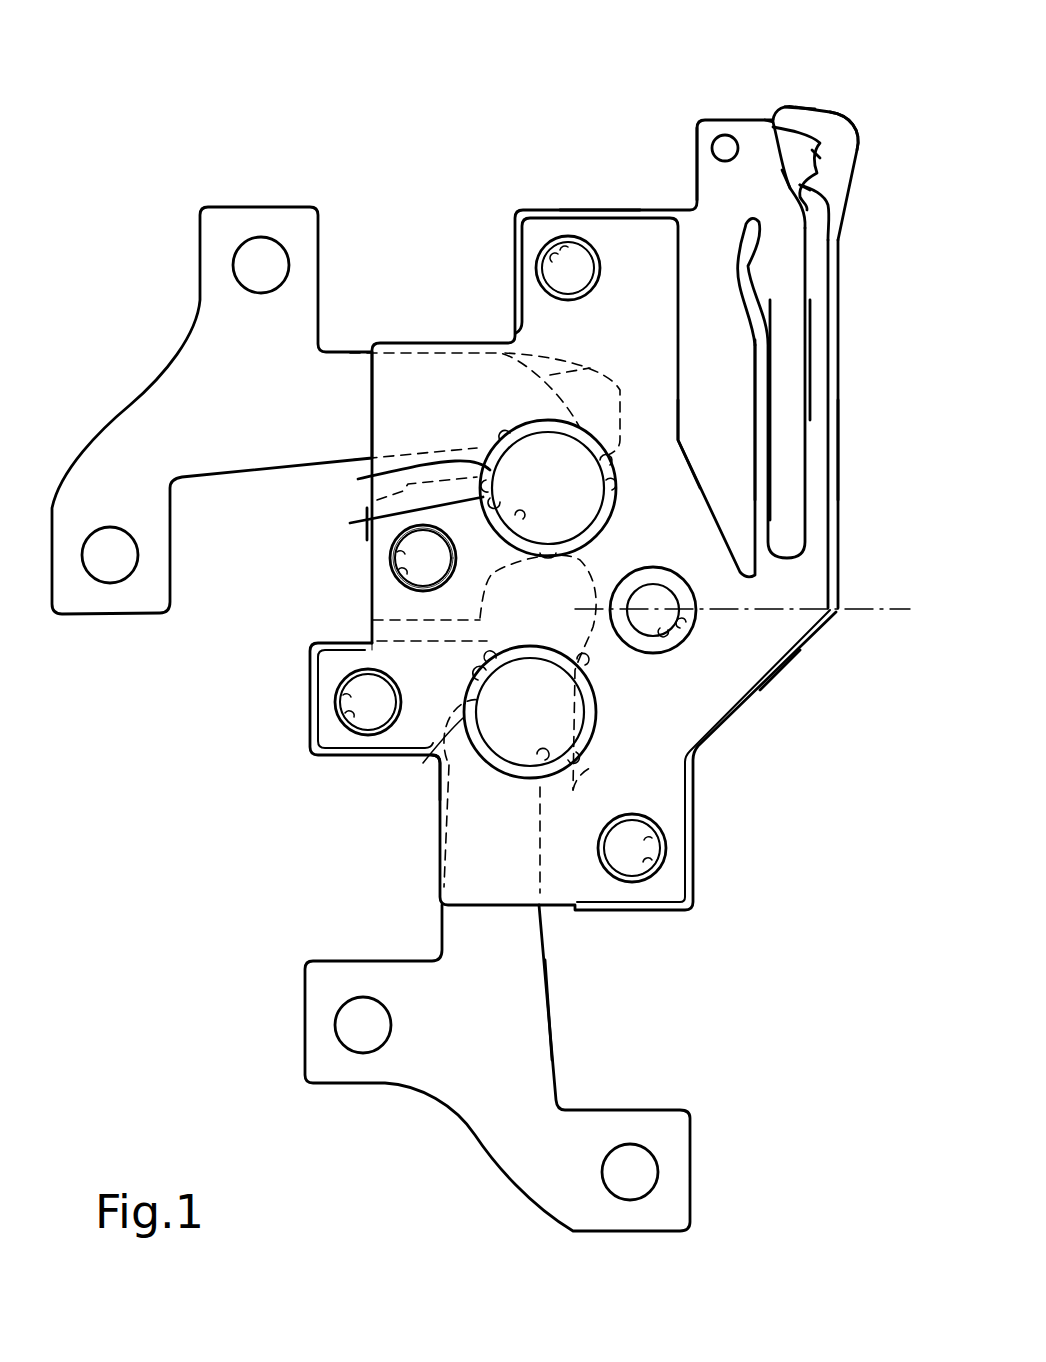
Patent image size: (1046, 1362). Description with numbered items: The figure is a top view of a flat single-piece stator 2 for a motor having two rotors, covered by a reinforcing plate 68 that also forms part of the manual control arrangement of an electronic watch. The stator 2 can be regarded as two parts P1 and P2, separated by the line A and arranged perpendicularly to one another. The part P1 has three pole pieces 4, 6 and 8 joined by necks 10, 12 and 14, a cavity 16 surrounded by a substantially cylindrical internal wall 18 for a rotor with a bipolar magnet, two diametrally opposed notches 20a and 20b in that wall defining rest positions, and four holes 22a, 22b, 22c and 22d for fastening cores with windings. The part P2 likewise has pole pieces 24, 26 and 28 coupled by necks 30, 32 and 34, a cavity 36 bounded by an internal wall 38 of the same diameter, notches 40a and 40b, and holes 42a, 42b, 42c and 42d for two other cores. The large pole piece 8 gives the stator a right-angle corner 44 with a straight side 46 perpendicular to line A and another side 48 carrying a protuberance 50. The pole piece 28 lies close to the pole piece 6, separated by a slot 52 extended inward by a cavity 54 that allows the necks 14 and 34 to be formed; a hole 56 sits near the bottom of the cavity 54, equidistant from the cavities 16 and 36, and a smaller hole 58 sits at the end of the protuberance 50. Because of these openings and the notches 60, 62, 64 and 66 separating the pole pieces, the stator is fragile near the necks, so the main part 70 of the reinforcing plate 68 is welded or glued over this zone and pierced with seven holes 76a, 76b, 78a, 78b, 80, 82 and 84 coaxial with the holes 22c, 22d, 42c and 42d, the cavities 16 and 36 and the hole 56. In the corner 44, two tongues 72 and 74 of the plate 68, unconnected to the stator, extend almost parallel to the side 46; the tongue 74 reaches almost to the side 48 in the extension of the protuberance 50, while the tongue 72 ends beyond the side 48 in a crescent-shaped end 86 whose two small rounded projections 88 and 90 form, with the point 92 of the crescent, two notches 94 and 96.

The stator 2 is at (563, 1013).
The pole piece 4 is at (280, 411).
The pole piece 6 is at (482, 563).
The pole piece 8 is at (726, 481).
The neck 10 is at (375, 478).
The neck 12 is at (613, 453).
The neck 14 is at (553, 556).
The cavity 16 is at (560, 506).
The internal wall 18 is at (523, 525).
The notch 20a is at (400, 515).
The notch 20b is at (605, 480).
The hole 22a is at (277, 257).
The hole 22b is at (114, 575).
The hole 22c is at (400, 558).
The hole 22d is at (565, 244).
The pole piece 24 is at (494, 1033).
The pole piece 26 is at (652, 756).
The pole piece 28 is at (441, 691).
The neck 30 is at (520, 782).
The neck 32 is at (437, 762).
The neck 34 is at (568, 655).
The cavity 36 is at (541, 729).
The internal wall 38 is at (518, 776).
The notch 40a is at (578, 760).
The notch 40b is at (480, 685).
The hole 42a is at (354, 1030).
The hole 42b is at (648, 1174).
The hole 42c is at (648, 862).
The hole 42d is at (343, 725).
The corner 44 is at (770, 297).
The straight side 46 is at (842, 440).
The side 48 is at (630, 208).
The protuberance 50 is at (750, 148).
The slot 52 is at (387, 625).
The cavity 54 is at (570, 623).
The hole 56 is at (664, 620).
The hole 58 is at (720, 158).
The notch 60 is at (387, 487).
The notch 62 is at (570, 365).
The notch 64 is at (543, 845).
The notch 66 is at (430, 754).
The reinforcing plate 68 is at (760, 680).
The main part 70 is at (428, 380).
The tongue 72 is at (818, 360).
The tongue 74 is at (757, 385).
The hole 76a is at (395, 587).
The hole 76b is at (548, 262).
The hole 78a is at (652, 846).
The hole 78b is at (347, 692).
The hole 80 is at (518, 430).
The hole 82 is at (462, 720).
The hole 84 is at (682, 630).
The end 86 is at (840, 137).
The rounded projection 88 is at (803, 187).
The rounded projection 90 is at (820, 158).
The point 92 is at (793, 120).
The notch 94 is at (787, 177).
The notch 96 is at (756, 121).
The line A- A is at (734, 627).
The first part P1 is at (183, 342).
The second part P2 is at (440, 1107).